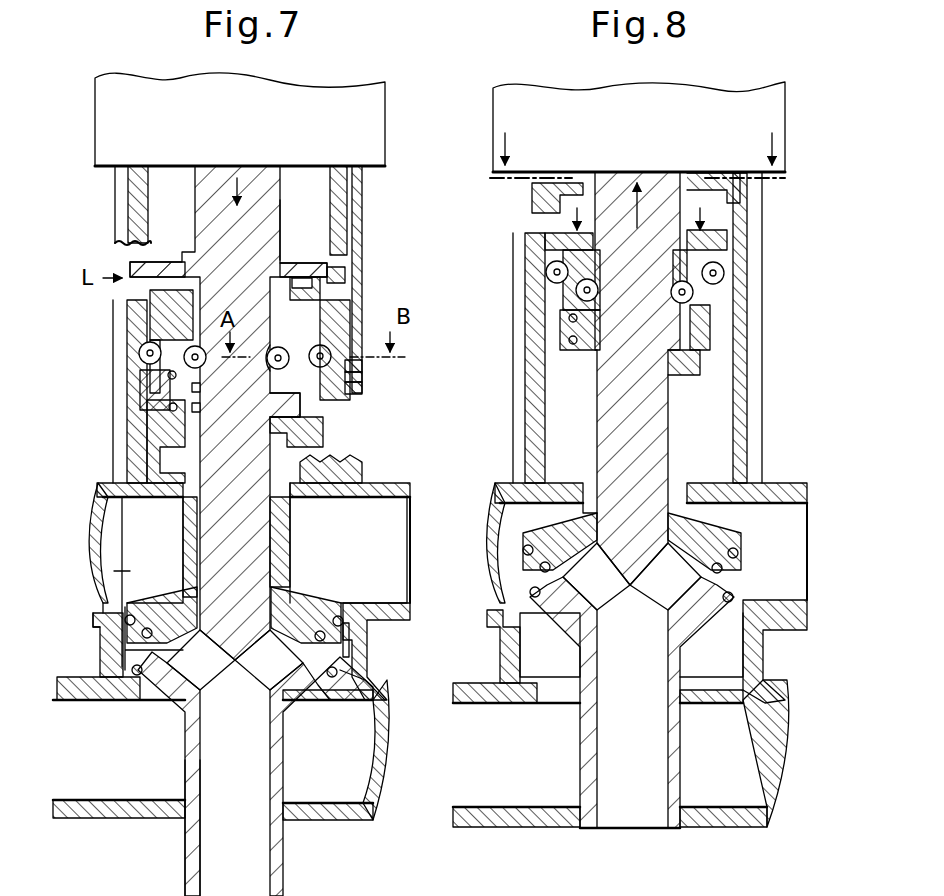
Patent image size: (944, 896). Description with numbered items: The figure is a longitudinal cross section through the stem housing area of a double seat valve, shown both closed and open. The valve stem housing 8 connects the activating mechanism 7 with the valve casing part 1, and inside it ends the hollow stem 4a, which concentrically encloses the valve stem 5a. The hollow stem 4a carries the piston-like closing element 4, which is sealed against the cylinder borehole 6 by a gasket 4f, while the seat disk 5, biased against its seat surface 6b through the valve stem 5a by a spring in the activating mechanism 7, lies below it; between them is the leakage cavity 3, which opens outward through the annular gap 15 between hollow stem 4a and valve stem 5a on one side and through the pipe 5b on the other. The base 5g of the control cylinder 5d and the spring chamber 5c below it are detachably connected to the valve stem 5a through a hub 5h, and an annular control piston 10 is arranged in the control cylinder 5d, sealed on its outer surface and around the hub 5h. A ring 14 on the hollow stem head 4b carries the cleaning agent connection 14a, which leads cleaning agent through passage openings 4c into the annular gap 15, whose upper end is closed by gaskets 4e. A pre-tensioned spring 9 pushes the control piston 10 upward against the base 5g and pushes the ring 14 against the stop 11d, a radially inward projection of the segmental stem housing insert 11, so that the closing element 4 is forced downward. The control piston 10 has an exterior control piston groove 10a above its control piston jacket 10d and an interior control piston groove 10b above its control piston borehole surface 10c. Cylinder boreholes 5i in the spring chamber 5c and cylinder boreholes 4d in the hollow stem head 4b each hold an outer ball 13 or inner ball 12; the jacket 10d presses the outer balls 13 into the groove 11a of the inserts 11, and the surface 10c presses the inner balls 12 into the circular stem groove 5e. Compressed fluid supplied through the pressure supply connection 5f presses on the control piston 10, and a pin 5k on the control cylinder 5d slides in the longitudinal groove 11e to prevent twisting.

In FIG. 7, the valve casing part 1 is at (122, 559).
In FIG. 7, the leakage cavity 3 is at (168, 643).
In FIG. 7, the piston-like closing element 4 is at (317, 617).
In FIG. 8, the piston-like closing element 4 is at (497, 490).
In FIG. 7, the hollow stem 4a is at (190, 508).
In FIG. 7, the hollow stem head 4b is at (155, 433).
In FIG. 8, the hollow stem head 4b is at (712, 268).
In FIG. 7, the passage openings 4c is at (300, 490).
In FIG. 7, the cylinder boreholes 4d is at (201, 379).
In FIG. 7, the gaskets 4e is at (201, 405).
In FIG. 7, the gasket 4f is at (120, 618).
In FIG. 7, the seat disk 5 is at (297, 697).
In FIG. 8, the seat disk 5 is at (562, 628).
In FIG. 7, the valve stem 5a is at (212, 555).
In FIG. 8, the valve stem 5a is at (620, 420).
In FIG. 7, the pipe 5b is at (193, 852).
In FIG. 7, the spring chamber 5c is at (305, 410).
In FIG. 8, the spring chamber 5c is at (717, 360).
In FIG. 7, the control cylinder 5d is at (150, 297).
In FIG. 7, the circular stem groove 5e is at (276, 352).
In FIG. 7, the pressure supply connection 5f is at (130, 266).
In FIG. 7, the base 5g is at (307, 267).
In FIG. 7, the hub 5h is at (283, 290).
In FIG. 7, the cylinder boreholes 5i is at (142, 333).
In FIG. 8, the pin 5k is at (733, 200).
In FIG. 7, the cylinder borehole 6 is at (349, 643).
In FIG. 7, the seat surface 6b is at (342, 677).
In FIG. 7, the activating mechanism 7 is at (110, 128).
In FIG. 8, the activating mechanism 7 is at (493, 145).
In FIG. 7, the valve stem housing 8 is at (118, 180).
In FIG. 7, the spring 9 is at (170, 408).
In FIG. 7, the control piston 10 is at (313, 285).
In FIG. 8, the control piston 10 is at (565, 240).
In FIG. 7, the exterior control piston groove 10a is at (312, 318).
In FIG. 7, the interior control piston groove 10b is at (360, 366).
In FIG. 7, the control piston borehole surface 10c is at (350, 392).
In FIG. 7, the control piston jacket 10d is at (350, 376).
In FIG. 7, the stem housing insert 11 is at (133, 208).
In FIG. 7, the groove 11a is at (140, 372).
In FIG. 7, the stop 11d is at (126, 503).
In FIG. 8, the longitudinal groove 11e is at (733, 235).
In FIG. 7, the inner ball 12 is at (160, 395).
In FIG. 8, the inner ball 12 is at (700, 313).
In FIG. 7, the outer ball 13 is at (137, 353).
In FIG. 8, the outer ball 13 is at (707, 292).
In FIG. 7, the ring 14 is at (152, 437).
In FIG. 7, the cleaning agent connection 14a is at (317, 433).
In FIG. 7, the annular gap 15 is at (275, 545).